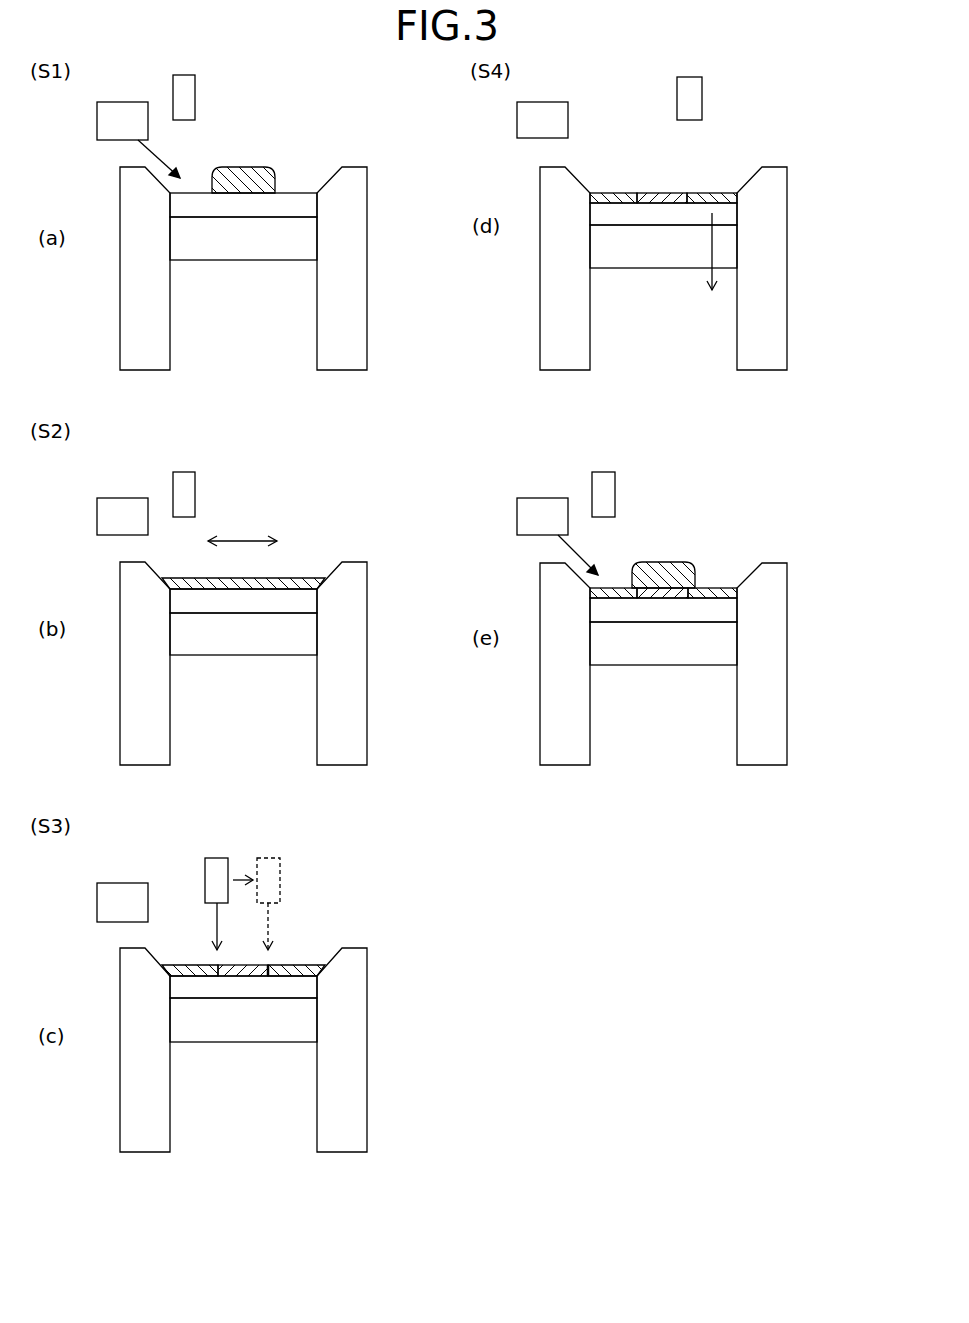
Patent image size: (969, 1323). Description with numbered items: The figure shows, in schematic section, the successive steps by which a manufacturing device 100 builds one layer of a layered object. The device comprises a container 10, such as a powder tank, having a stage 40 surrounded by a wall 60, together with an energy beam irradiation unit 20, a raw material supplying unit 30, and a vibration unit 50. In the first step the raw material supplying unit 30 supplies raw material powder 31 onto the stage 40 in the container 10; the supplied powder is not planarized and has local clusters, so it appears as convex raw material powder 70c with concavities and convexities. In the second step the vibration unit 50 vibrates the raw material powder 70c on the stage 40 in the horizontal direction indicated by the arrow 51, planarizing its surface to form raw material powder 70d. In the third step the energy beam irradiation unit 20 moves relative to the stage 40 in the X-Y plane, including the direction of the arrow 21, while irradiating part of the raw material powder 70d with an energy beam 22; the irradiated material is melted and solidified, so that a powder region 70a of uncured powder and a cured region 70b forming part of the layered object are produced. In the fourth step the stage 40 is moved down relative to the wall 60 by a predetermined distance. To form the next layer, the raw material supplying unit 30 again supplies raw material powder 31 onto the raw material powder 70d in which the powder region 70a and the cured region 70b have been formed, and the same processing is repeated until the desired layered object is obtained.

The manufacturing device 100 is at (330, 112).
The container 10 is at (383, 175).
The energy beam irradiation unit 20 is at (195, 93).
The arrow 21 is at (240, 877).
The energy beam 22 is at (213, 915).
The raw material supplying unit 30 is at (97, 120).
The raw material powder 31 is at (162, 158).
The stage 40 is at (297, 205).
The vibration unit 50 is at (250, 243).
The arrow 51 is at (242, 537).
The wall 60 is at (137, 298).
The powder region 70a is at (607, 197).
The cured region 70b is at (658, 198).
The convex raw material powder 70c is at (242, 177).
The raw material powder 70d is at (730, 193).